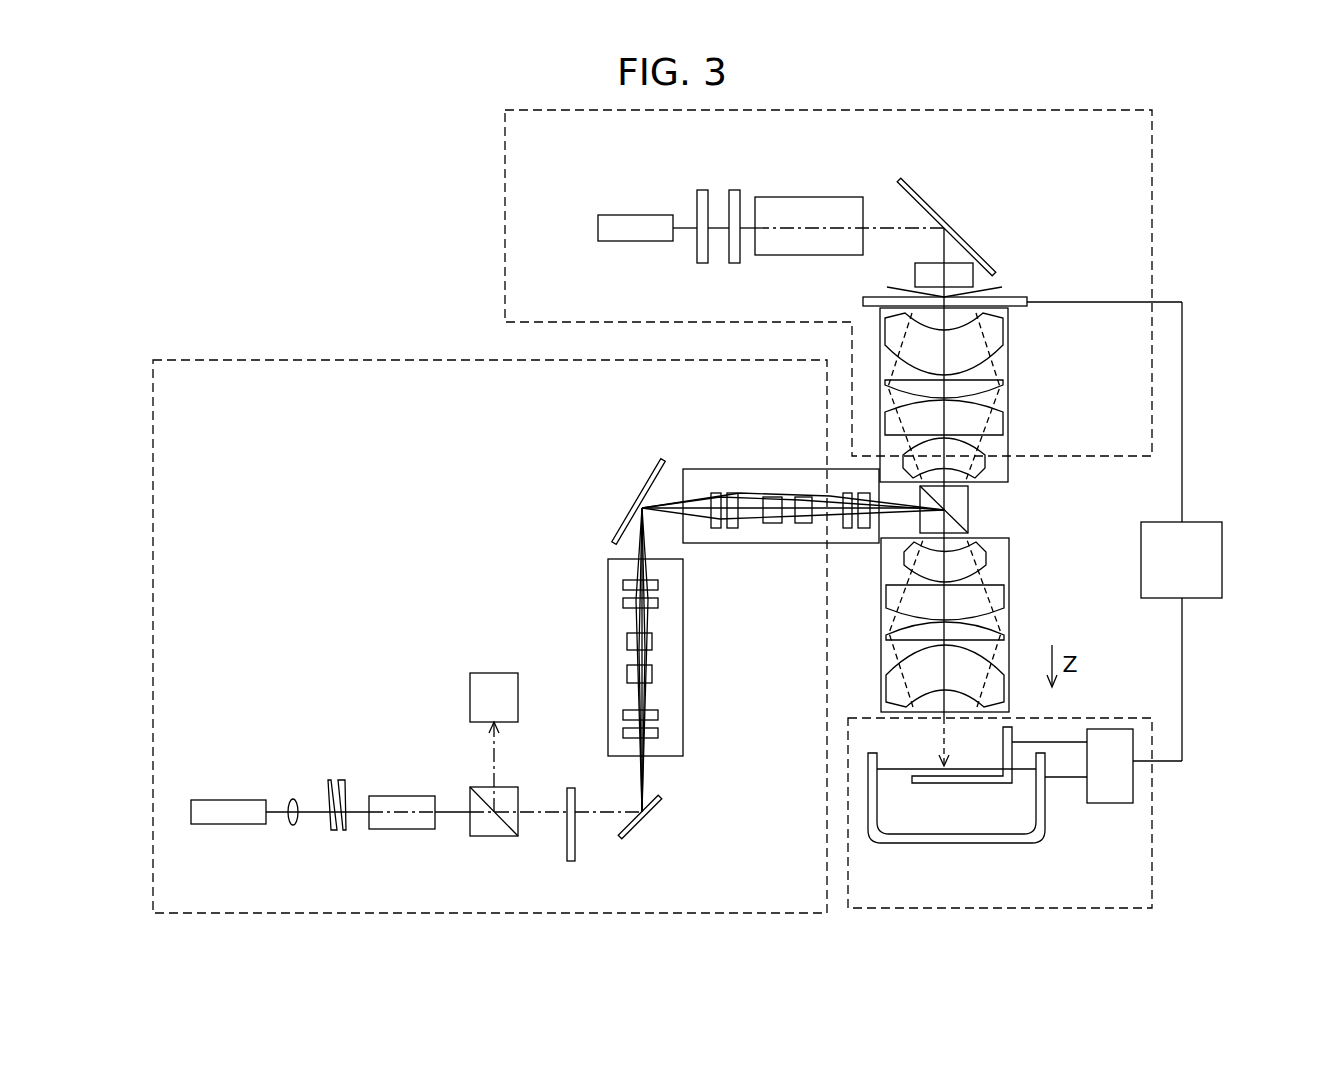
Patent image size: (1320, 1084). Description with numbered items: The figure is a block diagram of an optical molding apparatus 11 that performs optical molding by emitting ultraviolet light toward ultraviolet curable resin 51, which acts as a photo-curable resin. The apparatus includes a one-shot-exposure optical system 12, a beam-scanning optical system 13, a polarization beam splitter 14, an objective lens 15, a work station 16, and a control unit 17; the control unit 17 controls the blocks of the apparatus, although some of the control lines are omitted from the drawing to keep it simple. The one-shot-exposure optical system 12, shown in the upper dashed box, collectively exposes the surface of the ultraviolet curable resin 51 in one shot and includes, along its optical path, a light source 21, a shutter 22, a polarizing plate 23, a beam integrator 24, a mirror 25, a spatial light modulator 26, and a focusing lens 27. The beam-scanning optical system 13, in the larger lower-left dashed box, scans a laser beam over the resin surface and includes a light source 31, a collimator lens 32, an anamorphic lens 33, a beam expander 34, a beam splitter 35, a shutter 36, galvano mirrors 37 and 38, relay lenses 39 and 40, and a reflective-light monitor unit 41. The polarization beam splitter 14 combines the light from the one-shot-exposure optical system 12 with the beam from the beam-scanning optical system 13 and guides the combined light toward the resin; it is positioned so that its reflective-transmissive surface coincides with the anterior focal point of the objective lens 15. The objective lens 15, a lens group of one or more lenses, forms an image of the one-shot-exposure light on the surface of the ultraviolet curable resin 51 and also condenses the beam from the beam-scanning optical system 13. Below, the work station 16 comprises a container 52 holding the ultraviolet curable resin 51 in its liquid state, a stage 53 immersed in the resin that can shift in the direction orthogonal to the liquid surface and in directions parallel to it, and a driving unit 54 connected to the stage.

The optical molding apparatus 11 is at (243, 212).
The one-shot-exposure optical system 12 is at (505, 205).
The beam-scanning optical system 13 is at (325, 360).
The polarization beam splitter 14 is at (968, 510).
The objective lens 15 is at (1009, 615).
The work station 16 is at (1152, 818).
The control unit 17 is at (1222, 560).
The light source 21 is at (598, 228).
The shutter 22 is at (700, 190).
The polarizing plate 23 is at (735, 190).
The beam integrator 24 is at (805, 197).
The mirror 25 is at (950, 222).
The spatial light modulator 26 is at (863, 302).
The focusing lens 27 is at (1008, 395).
The light source 31 is at (221, 824).
The collimator lens 32 is at (293, 825).
The anamorphic lens 33 is at (343, 838).
The beam expander 34 is at (404, 796).
The beam splitter 35 is at (494, 836).
The shutter 36 is at (575, 845).
The galvano mirror 37 is at (642, 822).
The galvano mirror 38 is at (640, 500).
The relay lens 39 is at (683, 663).
The relay lens 40 is at (762, 469).
The reflective-light monitor unit 41 is at (494, 673).
The ultraviolet curable resin 51 is at (905, 815).
The container 52 is at (1022, 843).
The stage 53 is at (958, 785).
The driving unit 54 is at (1110, 803).